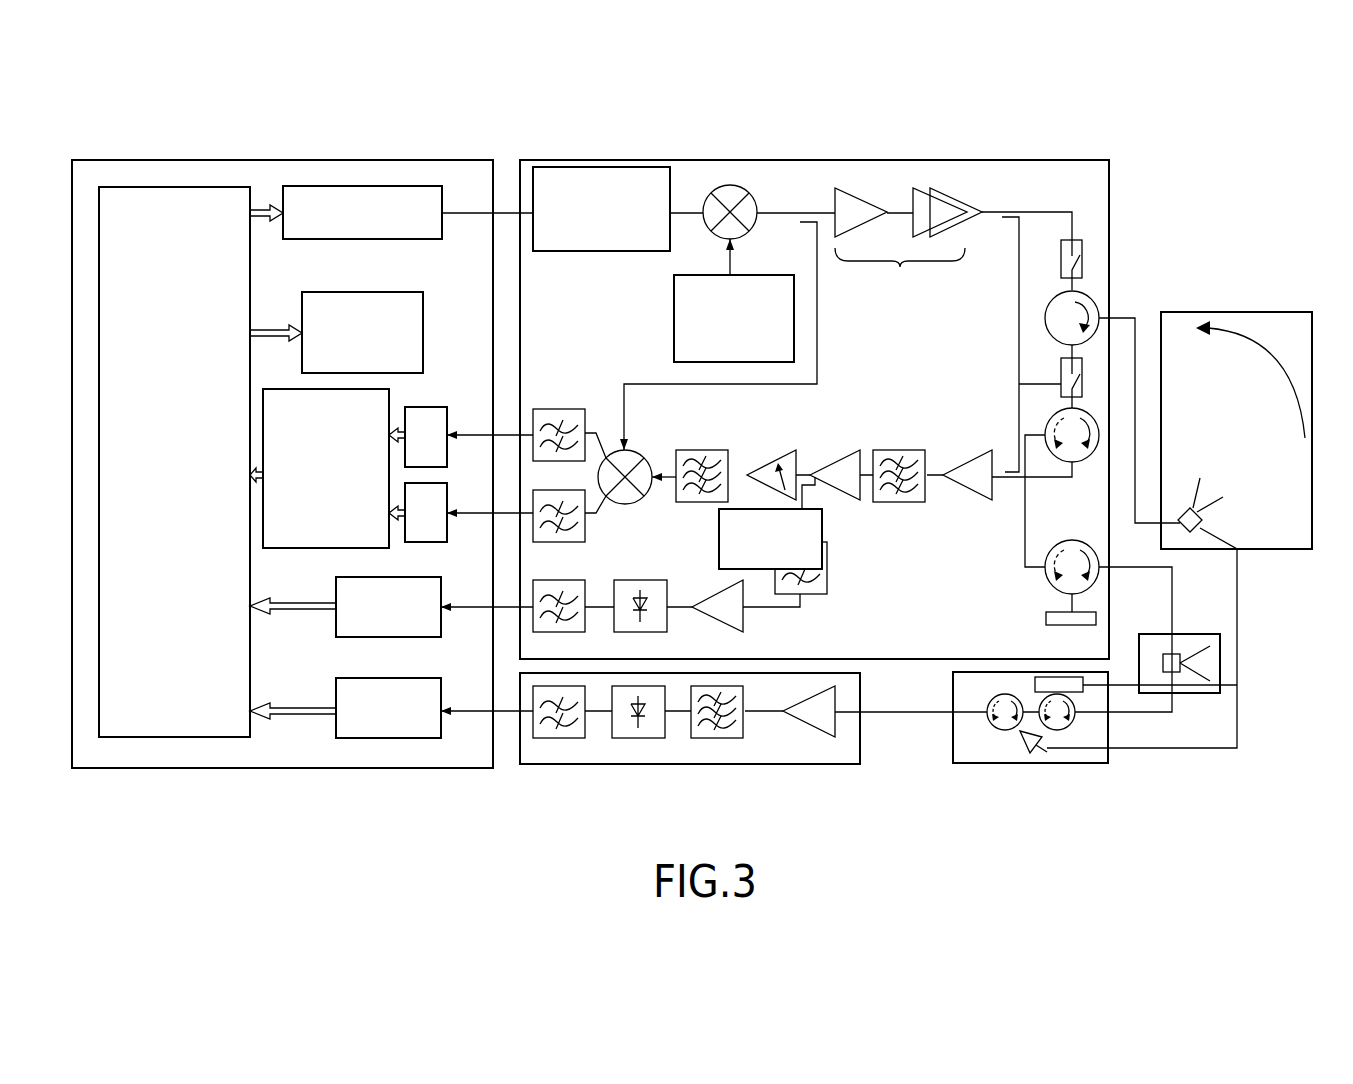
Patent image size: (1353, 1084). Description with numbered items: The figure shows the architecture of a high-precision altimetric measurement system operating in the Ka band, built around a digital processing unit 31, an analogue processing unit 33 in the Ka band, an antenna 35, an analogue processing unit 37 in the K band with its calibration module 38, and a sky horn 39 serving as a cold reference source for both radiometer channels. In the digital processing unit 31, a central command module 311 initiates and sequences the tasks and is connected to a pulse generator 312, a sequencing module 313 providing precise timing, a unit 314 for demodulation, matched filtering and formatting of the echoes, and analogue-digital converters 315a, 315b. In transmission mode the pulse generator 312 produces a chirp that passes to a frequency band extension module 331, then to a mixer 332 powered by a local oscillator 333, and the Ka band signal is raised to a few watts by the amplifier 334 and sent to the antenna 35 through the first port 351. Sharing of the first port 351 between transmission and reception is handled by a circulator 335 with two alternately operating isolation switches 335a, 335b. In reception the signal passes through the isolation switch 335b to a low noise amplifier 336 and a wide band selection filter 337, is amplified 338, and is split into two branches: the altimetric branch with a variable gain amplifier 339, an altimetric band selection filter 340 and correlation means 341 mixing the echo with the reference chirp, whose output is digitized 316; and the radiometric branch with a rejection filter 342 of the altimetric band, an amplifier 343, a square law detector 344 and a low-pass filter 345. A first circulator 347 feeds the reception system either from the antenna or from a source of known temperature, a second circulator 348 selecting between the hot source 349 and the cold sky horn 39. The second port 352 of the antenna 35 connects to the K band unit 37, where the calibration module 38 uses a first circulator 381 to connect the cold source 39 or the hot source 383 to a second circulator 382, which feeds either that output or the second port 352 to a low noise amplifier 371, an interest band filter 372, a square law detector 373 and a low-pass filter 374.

The digital processing unit 31 is at (273, 160).
The central command module 311 is at (200, 455).
The pulse generator 312 is at (398, 239).
The sequencing module 313 is at (423, 333).
The unit for the demodulation, matched filtering and formatting of the echoes 314 is at (345, 548).
The analogue-digital converter 315a is at (382, 637).
The analogue-digital converter 315b is at (393, 738).
The digitizing means 316 is at (450, 415).
The analogue processing unit in the Ka band 33 is at (823, 160).
The frequency band extension module 331 is at (590, 252).
The mixer 332 is at (703, 222).
The local oscillator 333 is at (674, 318).
The amplifier 334 is at (908, 247).
The circulator 335 is at (1045, 320).
The isolation switch 335a is at (1082, 262).
The isolation switch 335b is at (1019, 384).
The low noise amplifier 336 is at (947, 487).
The wide band selection filter 337 is at (888, 450).
The amplifier 338 is at (827, 490).
The variable gain amplifier 339 is at (773, 452).
The altimetric band selection filter 340 is at (690, 452).
The correlation means 341 is at (648, 455).
The rejection filter 342 is at (832, 563).
The amplifier 343 is at (743, 613).
The square law detector 344 is at (647, 580).
The low-pass filter 345 is at (562, 580).
The first circulator 347 is at (1046, 425).
The second circulator 348 is at (1055, 540).
The hot source 349 is at (1046, 618).
The antenna 35 is at (1230, 312).
The first port 351 is at (1125, 318).
The second port 352 is at (1237, 587).
The analogue processing unit in the K band 37 is at (797, 764).
The low noise amplifier 371 is at (833, 737).
The interest band filter 372 is at (713, 737).
The square law detector 373 is at (638, 737).
The low-pass filter 374 is at (553, 737).
The calibration module 38 is at (963, 763).
The first circulator 381 is at (1052, 732).
The second circulator 382 is at (1005, 732).
The hot source 383 is at (1097, 687).
The sky horn 39 is at (1197, 634).